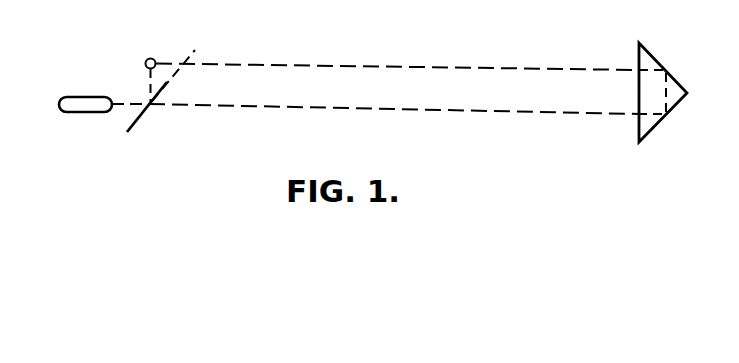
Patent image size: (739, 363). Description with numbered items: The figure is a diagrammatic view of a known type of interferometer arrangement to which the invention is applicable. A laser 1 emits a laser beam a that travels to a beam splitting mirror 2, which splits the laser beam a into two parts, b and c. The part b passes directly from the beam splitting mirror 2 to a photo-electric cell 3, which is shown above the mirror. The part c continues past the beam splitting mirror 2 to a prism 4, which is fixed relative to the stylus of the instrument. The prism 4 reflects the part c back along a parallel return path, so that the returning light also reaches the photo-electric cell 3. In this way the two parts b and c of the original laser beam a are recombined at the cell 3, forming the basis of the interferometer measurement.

The laser 1 is at (77, 112).
The beam splitting mirror 2 is at (138, 125).
The photo-electric cell 3 is at (152, 57).
The prism 4 is at (648, 63).
The laser beam a is at (132, 101).
The beam part b is at (182, 63).
The beam part c is at (247, 110).